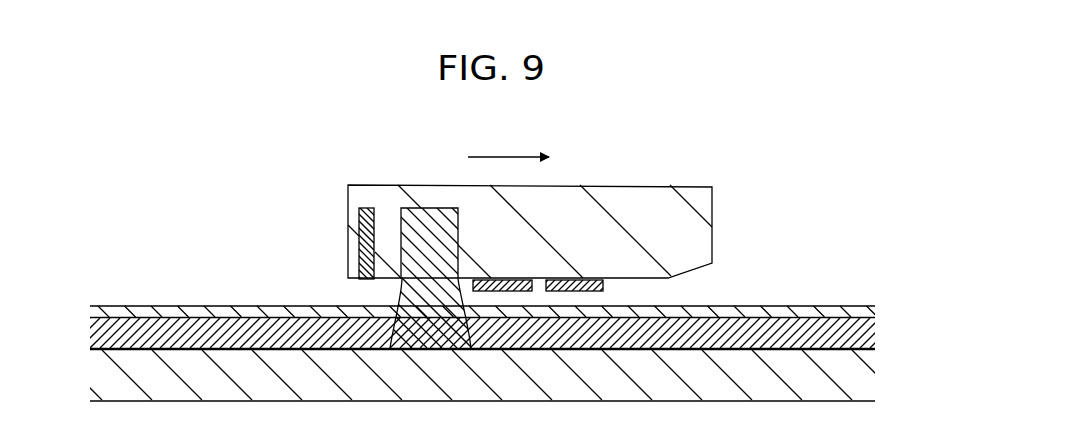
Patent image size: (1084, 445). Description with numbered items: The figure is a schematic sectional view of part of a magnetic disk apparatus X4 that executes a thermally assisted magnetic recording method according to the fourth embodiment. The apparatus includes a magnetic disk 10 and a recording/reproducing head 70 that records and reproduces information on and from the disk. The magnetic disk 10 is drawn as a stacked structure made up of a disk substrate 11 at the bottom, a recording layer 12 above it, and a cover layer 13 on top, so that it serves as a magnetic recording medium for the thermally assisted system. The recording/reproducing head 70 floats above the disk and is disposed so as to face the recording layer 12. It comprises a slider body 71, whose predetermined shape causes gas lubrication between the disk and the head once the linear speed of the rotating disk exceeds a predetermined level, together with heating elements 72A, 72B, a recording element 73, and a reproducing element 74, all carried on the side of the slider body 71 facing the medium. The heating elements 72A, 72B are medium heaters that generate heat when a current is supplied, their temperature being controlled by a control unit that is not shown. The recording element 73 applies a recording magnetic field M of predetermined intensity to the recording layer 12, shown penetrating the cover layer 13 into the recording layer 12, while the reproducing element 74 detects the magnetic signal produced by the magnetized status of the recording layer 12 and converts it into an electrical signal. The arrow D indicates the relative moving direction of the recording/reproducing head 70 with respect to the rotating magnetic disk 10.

The magnetic disk 10 is at (834, 291).
The disk substrate 11 is at (855, 374).
The recording layer 12 is at (857, 336).
The cover layer 13 is at (857, 317).
The recording/reproducing head 70 is at (341, 183).
The slider body 71 is at (693, 197).
The heating element 72A is at (593, 280).
The heating element 72B is at (503, 280).
The recording element 73 is at (423, 218).
The reproducing element 74 is at (362, 232).
The recording magnetic field M is at (400, 288).
The arrow indicating relative moving direction D is at (508, 140).
The magnetic disk apparatus X4 is at (146, 236).